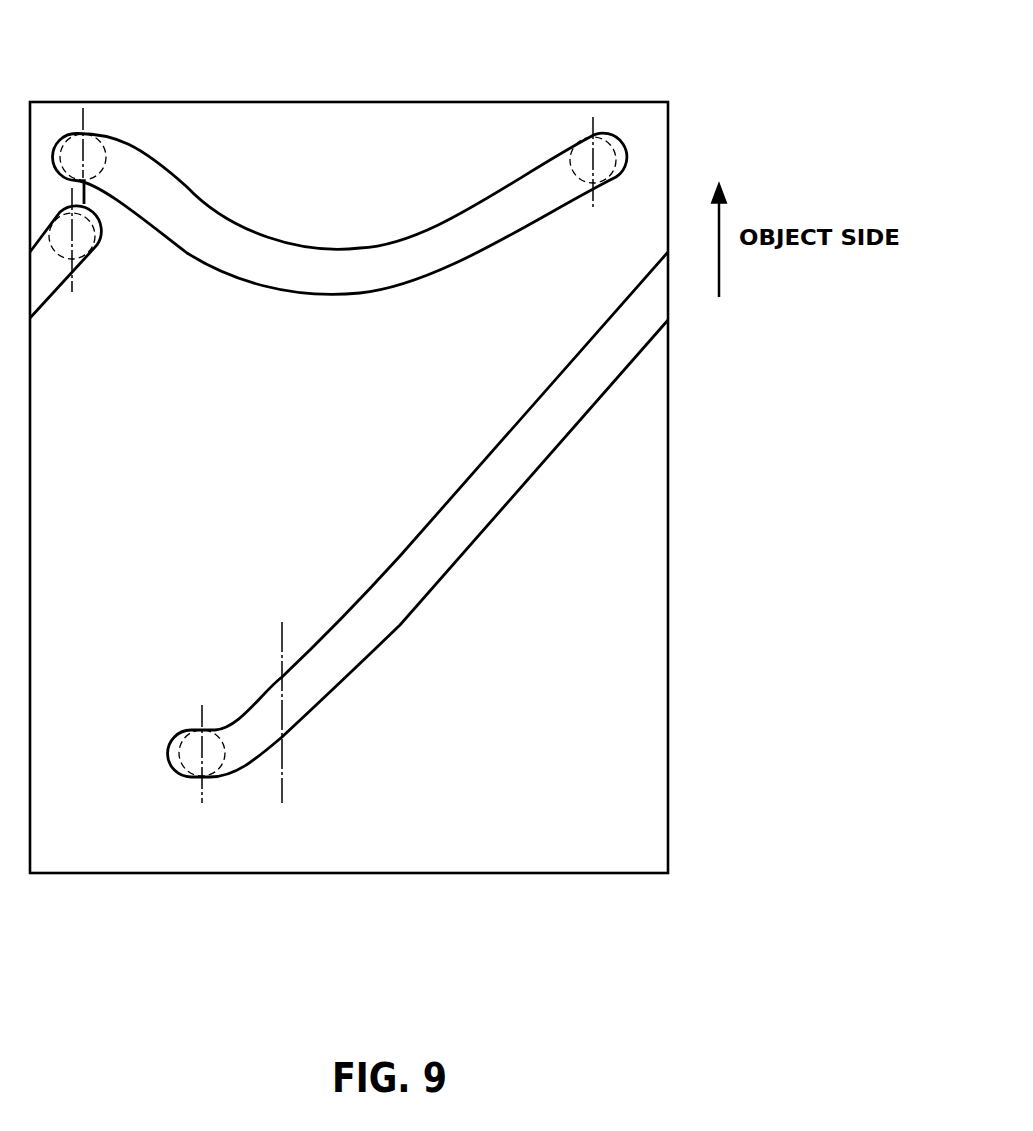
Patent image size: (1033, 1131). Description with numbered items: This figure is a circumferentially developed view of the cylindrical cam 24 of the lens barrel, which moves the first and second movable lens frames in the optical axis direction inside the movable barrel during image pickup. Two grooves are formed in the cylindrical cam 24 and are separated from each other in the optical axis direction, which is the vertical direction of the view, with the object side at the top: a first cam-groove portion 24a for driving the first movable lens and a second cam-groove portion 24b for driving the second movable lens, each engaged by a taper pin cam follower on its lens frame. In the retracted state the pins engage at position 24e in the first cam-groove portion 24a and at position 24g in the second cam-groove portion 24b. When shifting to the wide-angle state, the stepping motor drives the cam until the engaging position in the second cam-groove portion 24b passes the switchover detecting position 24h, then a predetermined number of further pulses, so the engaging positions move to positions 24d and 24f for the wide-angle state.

The cylindrical cam 24 is at (305, 123).
The first cam-groove portion 24a is at (242, 283).
The second cam-groove portion 24b is at (43, 312).
The wide-angle state engaging position 24d is at (96, 143).
The retracted state engaging position 24e is at (611, 134).
The wide-angle state engaging position 24f is at (193, 732).
The retracted state engaging position 24g is at (93, 254).
The switchover detecting position 24h is at (279, 695).